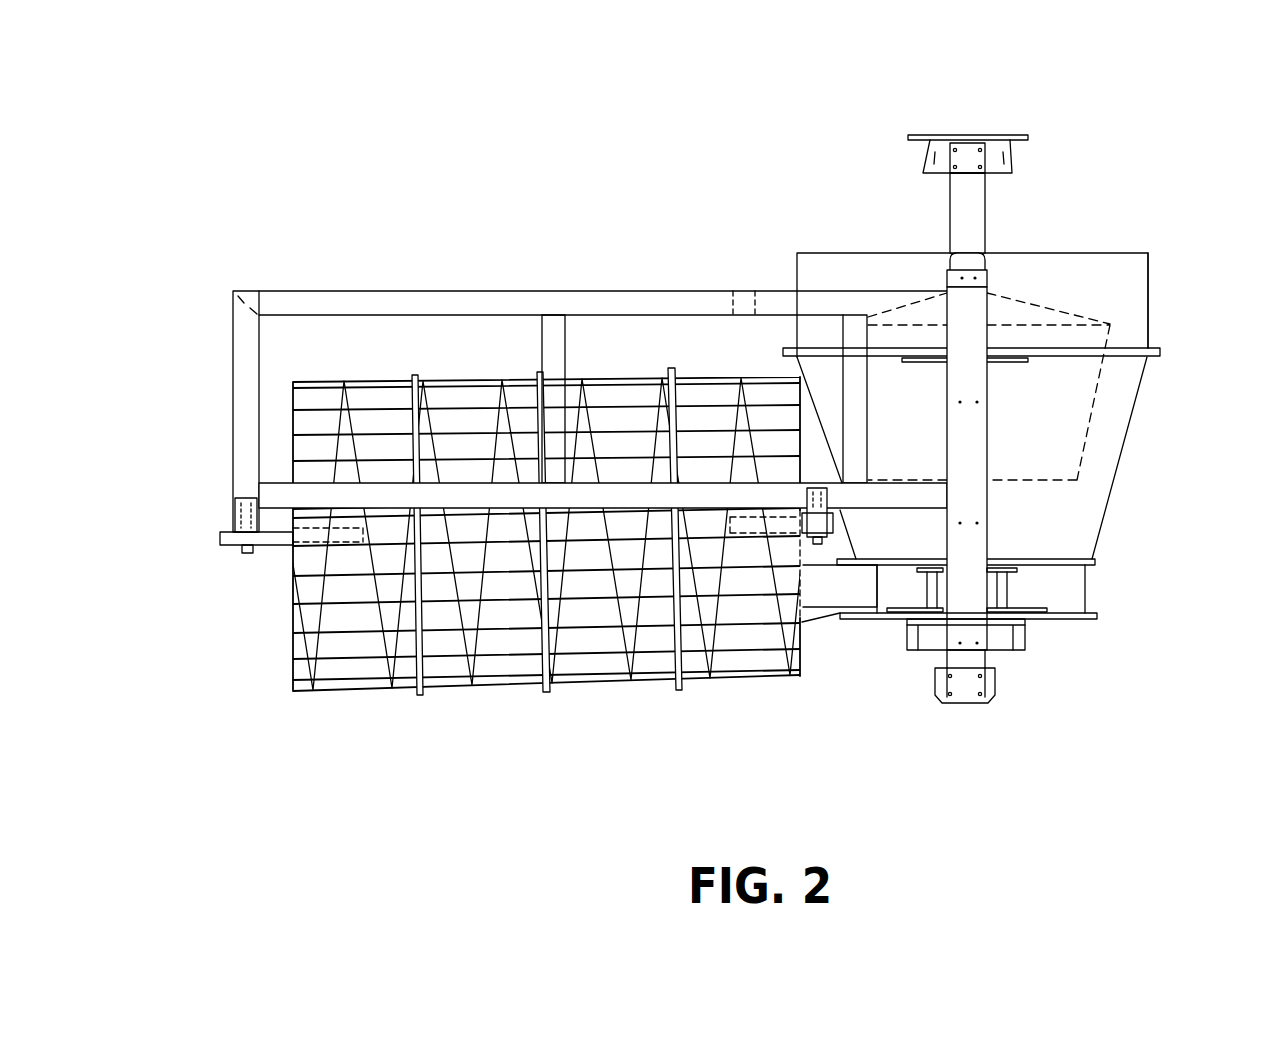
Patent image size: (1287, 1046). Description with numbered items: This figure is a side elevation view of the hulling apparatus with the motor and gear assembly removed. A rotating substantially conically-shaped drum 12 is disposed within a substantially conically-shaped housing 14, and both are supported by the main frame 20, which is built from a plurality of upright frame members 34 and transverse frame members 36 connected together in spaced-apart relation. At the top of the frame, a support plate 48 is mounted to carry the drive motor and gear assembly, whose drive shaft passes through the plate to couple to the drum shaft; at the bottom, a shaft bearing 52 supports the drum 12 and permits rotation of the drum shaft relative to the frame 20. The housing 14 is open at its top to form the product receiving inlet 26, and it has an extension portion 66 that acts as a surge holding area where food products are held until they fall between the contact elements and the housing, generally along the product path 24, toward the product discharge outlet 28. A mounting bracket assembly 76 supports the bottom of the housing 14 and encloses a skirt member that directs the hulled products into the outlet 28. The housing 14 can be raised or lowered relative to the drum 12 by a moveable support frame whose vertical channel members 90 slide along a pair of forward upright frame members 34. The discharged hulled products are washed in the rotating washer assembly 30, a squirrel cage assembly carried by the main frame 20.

The main frame 20 is at (544, 375).
The transverse frame members 36 is at (442, 300).
The upright frame members 34 is at (242, 400).
The rotating washer assembly 30 is at (512, 688).
The product path 24 is at (812, 587).
The product discharge outlet 28 is at (824, 608).
The product receiving inlet 26 is at (1022, 332).
The extension portion 66 is at (1150, 293).
The drum 12 is at (1112, 338).
The vertical channel members 90 is at (988, 448).
The support plate 48 is at (1028, 137).
The housing 14 is at (1097, 535).
The mounting bracket assembly 76 is at (1105, 608).
The shaft bearing 52 is at (990, 683).